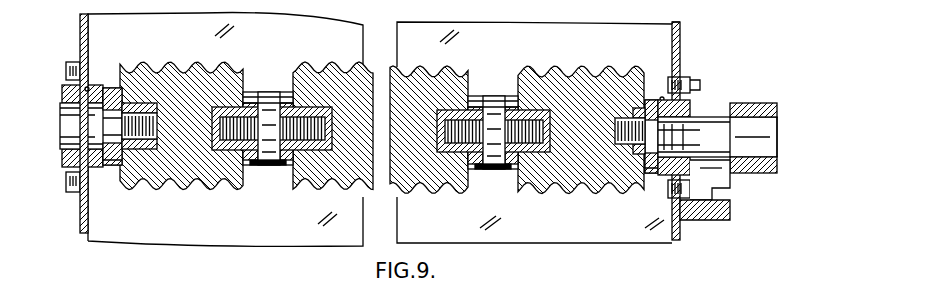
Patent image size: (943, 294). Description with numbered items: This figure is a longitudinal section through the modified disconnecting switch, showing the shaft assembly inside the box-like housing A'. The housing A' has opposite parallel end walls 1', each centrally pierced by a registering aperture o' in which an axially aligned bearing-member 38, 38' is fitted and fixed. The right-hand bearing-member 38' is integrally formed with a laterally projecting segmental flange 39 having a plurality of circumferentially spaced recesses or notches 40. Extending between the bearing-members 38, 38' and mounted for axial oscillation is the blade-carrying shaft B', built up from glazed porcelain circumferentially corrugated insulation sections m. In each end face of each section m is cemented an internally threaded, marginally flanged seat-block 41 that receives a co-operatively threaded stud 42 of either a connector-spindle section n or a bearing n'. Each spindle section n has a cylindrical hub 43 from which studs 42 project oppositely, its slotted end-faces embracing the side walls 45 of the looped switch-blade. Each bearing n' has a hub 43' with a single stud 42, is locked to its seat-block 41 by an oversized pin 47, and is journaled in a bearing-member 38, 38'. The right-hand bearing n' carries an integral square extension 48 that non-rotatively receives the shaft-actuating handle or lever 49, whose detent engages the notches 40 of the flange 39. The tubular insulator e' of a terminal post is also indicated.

The bearing-member 38 is at (65, 127).
The bearing-member 38' is at (695, 137).
The segmental flange 39 is at (702, 220).
The recesses or notches 40 is at (722, 194).
The seat-block 41 is at (150, 172).
The threaded stud 42 is at (302, 108).
The hub 43 is at (380, 181).
The hub 43' is at (380, 103).
The side walls 45 is at (256, 166).
The pin 47 is at (126, 102).
The extension 48 is at (776, 132).
The shaft-actuating handle or lever 49 is at (776, 172).
The end walls 1' is at (373, 144).
The housing A' is at (694, 15).
The blade-carrying shaft B' is at (380, 130).
The insulation sections m is at (184, 188).
The connector-spindle section n is at (384, 111).
The bearing n' is at (382, 184).
The tubular insulator e' is at (101, 70).
The apertures o' is at (653, 82).